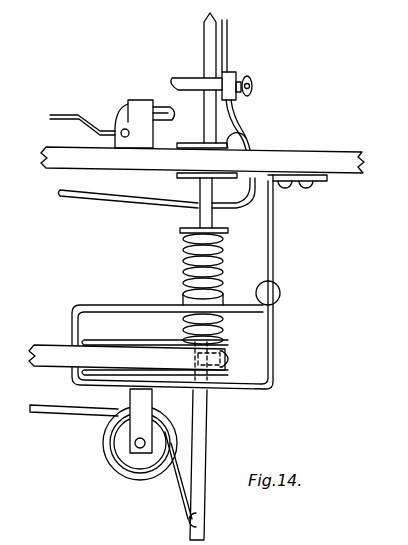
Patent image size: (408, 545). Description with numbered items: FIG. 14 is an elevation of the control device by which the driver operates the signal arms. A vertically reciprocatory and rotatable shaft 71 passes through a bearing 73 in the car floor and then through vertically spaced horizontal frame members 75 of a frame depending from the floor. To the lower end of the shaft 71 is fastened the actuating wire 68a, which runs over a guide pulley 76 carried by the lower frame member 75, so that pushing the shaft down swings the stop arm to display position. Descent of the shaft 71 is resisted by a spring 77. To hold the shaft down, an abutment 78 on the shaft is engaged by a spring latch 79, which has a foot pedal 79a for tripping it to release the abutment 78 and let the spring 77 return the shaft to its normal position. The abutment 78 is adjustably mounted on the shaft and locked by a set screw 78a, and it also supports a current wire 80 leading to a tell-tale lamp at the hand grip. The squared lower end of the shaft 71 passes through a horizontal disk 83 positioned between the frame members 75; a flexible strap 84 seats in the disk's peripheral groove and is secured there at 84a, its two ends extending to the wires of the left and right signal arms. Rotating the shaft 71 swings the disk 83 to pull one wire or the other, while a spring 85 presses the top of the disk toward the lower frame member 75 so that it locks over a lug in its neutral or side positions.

The shaft 71 is at (207, 40).
The bearing 73 is at (242, 137).
The frame members 75 is at (128, 298).
The guide pulley 76 is at (152, 474).
The spring 77 is at (222, 266).
The abutment 78 is at (170, 78).
The set screw 78a is at (252, 85).
The spring latch 79 is at (170, 116).
The foot pedal 79a is at (76, 114).
The current wire 80 is at (106, 203).
The disk 83 is at (148, 340).
The flexible strap 84 is at (48, 346).
The strap securing point 84a is at (240, 372).
The spring 85 is at (226, 328).
The actuating wire 68a is at (84, 414).